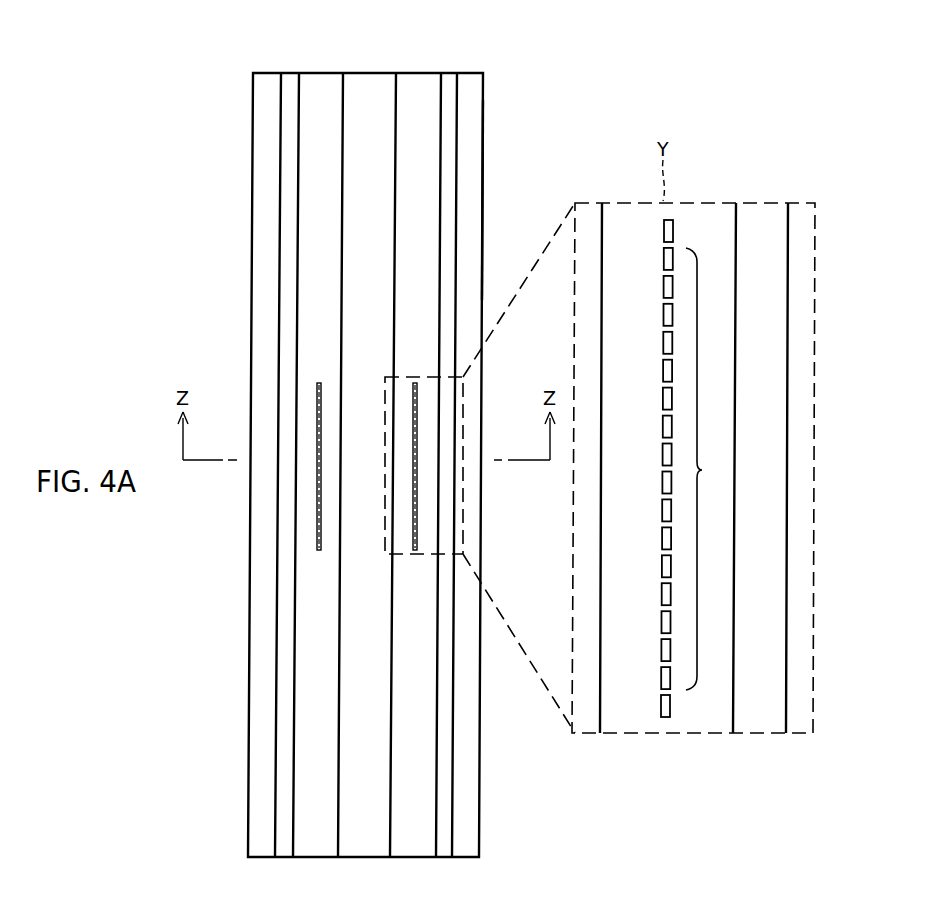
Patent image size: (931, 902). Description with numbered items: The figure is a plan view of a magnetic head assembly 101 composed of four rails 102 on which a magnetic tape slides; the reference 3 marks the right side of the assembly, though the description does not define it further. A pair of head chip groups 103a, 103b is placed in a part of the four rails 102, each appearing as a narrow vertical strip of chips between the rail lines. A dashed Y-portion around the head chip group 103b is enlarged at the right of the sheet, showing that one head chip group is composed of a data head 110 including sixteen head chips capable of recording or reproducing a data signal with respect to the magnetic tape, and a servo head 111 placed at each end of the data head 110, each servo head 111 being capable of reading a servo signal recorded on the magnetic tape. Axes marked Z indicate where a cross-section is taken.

The liquid crystal panel 3 is at (484, 118).
The magnetic head assembly 101 is at (220, 86).
The rails 102 is at (266, 158).
The head chip group 103a is at (318, 496).
The head chip group 103b is at (417, 496).
The data head 110 is at (702, 470).
The servo head 111 is at (674, 230).